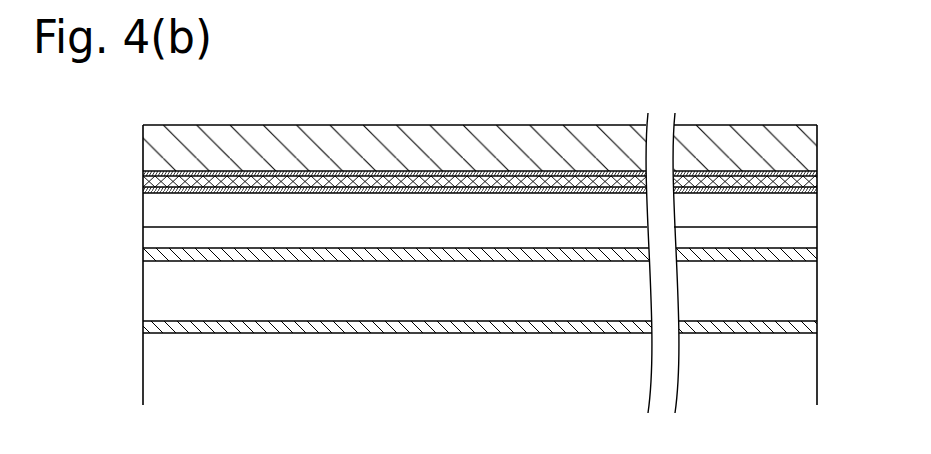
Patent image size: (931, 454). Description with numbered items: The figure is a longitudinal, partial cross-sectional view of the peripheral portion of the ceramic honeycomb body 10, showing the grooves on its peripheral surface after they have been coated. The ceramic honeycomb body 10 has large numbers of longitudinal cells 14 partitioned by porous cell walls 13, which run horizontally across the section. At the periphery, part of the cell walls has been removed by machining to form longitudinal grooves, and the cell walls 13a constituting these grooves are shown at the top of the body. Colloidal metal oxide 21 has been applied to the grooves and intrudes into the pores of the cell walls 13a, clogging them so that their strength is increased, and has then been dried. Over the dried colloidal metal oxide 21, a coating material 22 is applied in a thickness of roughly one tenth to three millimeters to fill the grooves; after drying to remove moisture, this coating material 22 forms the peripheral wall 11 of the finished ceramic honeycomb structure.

The ceramic honeycomb body 10 is at (133, 236).
The peripheral wall 11 is at (394, 148).
The cell walls 13 is at (163, 329).
The cell walls on the peripheral surface 13a is at (555, 171).
The longitudinal cells 14 is at (155, 290).
The colloidal metal oxide 21 is at (332, 171).
The coating material 22 is at (423, 141).